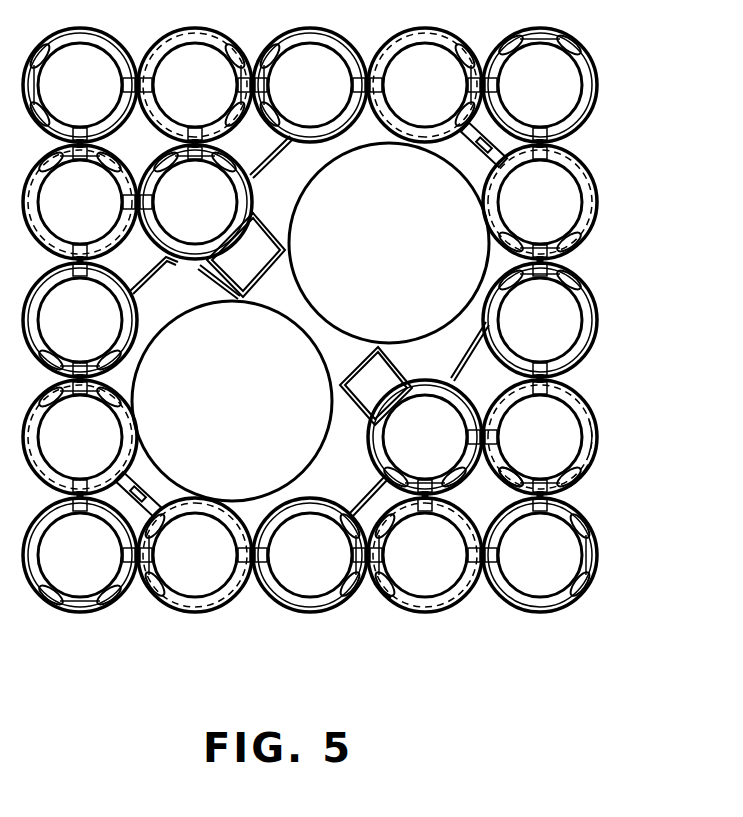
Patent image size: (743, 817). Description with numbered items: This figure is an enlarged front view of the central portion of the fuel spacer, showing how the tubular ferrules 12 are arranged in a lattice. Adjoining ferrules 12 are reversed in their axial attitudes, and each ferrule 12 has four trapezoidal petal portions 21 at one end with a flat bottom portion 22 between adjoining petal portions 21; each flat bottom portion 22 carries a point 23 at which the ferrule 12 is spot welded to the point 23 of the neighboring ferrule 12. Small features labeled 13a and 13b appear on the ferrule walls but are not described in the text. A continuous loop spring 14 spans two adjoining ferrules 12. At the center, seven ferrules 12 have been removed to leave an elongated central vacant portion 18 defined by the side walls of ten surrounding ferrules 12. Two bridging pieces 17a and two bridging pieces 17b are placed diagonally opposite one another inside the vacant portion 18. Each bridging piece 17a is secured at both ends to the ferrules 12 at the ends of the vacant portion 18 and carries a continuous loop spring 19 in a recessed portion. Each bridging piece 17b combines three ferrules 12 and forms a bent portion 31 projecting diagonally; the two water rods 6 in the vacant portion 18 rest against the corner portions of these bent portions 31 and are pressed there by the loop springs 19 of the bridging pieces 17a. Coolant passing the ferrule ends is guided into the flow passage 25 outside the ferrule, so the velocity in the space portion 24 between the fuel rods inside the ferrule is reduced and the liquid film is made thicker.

The water rod 6 is at (440, 331).
The tubular ferrule 12 is at (586, 393).
The lower retaining lobe 13a is at (520, 468).
The upper retaining lobe 13b is at (580, 283).
The continuous loop spring 14 is at (470, 555).
The bridging piece 17a is at (502, 137).
The bridging piece 17b is at (223, 287).
The central vacant portion 18 is at (300, 170).
The continuous loop spring 19 is at (468, 142).
The petal portion 21 is at (598, 488).
The flat bottom portion 22 is at (598, 433).
The point 23 is at (540, 500).
The space portion 24 is at (402, 603).
The flow passage 25 is at (509, 497).
The bent portion 31 is at (245, 288).